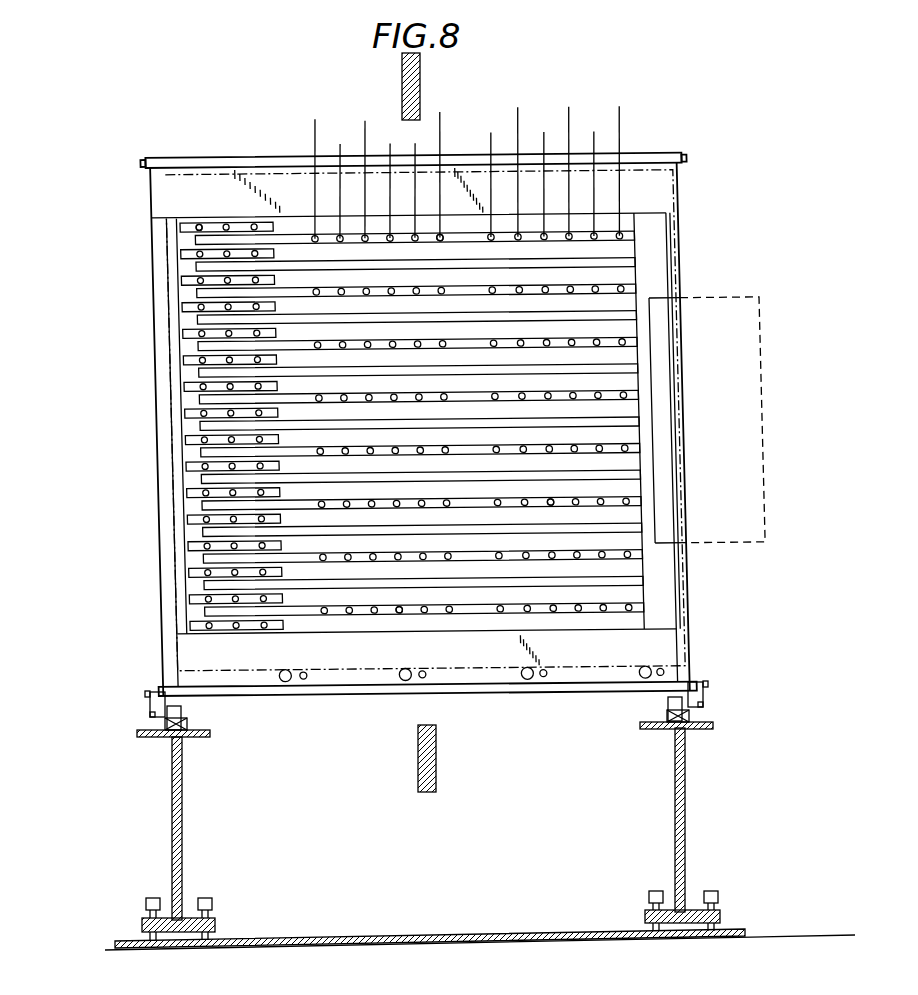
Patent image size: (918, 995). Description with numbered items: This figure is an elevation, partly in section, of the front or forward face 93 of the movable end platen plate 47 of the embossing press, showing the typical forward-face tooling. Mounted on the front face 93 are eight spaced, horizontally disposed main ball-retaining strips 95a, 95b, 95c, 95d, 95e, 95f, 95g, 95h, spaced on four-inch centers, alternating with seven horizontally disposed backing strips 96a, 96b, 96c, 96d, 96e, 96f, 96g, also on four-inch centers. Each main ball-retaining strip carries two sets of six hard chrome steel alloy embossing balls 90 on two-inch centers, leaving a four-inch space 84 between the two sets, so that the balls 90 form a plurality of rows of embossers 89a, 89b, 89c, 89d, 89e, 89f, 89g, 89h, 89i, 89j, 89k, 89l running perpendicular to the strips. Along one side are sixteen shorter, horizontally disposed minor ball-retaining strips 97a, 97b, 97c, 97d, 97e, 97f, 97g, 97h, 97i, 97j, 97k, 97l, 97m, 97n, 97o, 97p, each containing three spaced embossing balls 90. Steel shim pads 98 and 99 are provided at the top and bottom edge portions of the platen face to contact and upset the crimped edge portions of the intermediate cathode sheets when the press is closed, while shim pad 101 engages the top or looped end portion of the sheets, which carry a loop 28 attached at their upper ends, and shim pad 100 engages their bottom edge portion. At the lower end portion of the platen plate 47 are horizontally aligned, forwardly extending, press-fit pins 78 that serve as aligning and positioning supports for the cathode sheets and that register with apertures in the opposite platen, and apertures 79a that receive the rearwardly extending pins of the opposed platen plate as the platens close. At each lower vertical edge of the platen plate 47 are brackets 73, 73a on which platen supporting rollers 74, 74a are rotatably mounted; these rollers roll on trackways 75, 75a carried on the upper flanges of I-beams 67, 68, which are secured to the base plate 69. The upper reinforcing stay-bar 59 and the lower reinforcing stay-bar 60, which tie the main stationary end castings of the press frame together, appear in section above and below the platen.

The loop 28 is at (760, 372).
The movable end platen plate 47 is at (487, 698).
The upper reinforcing stay-bar 59 is at (400, 66).
The lower reinforcing stay-bar 60 is at (437, 772).
The I-beam 67 is at (676, 812).
The I-beam 68 is at (183, 836).
The base plate 69 is at (436, 938).
The bracket 73 is at (705, 698).
The bracket 73a is at (149, 704).
The platen supporting roller 74 is at (665, 732).
The platen supporting roller 74a is at (182, 714).
The trackway 75 is at (714, 723).
The trackway 75a is at (172, 738).
The forwardly extending pin 78 is at (303, 679).
The aperture 79a is at (282, 683).
The space 84 is at (485, 614).
The row of embossers 89a is at (624, 161).
The row of embossers 89b is at (599, 173).
The row of embossers 89c is at (570, 161).
The row of embossers 89d is at (544, 174).
The row of embossers 89e is at (520, 163).
The row of embossers 89f is at (491, 176).
The row of embossers 89g is at (450, 167).
The row of embossers 89h is at (417, 178).
The row of embossers 89i is at (386, 179).
The row of embossers 89j is at (363, 167).
The row of embossers 89k is at (344, 179).
The row of embossers 89l is at (322, 166).
The embossing ball 90 is at (249, 278).
The front face 93 is at (660, 194).
The main ball-retaining strip 95a is at (644, 607).
The main ball-retaining strip 95b is at (642, 554).
The main ball-retaining strip 95c is at (641, 501).
The main ball-retaining strip 95d is at (640, 448).
The main ball-retaining strip 95e is at (638, 395).
The main ball-retaining strip 95f is at (637, 342).
The main ball-retaining strip 95g is at (636, 289).
The main ball-retaining strip 95h is at (634, 236).
The backing strip 96a is at (643, 581).
The backing strip 96b is at (642, 528).
The backing strip 96c is at (640, 475).
The backing strip 96d is at (639, 421).
The backing strip 96e is at (638, 368).
The backing strip 96f is at (636, 315).
The backing strip 96g is at (635, 262).
The minor ball-retaining strip 97a is at (190, 626).
The minor ball-retaining strip 97b is at (189, 599).
The minor ball-retaining strip 97c is at (189, 573).
The minor ball-retaining strip 97d is at (188, 546).
The minor ball-retaining strip 97e is at (187, 520).
The minor ball-retaining strip 97f is at (187, 493).
The minor ball-retaining strip 97g is at (186, 467).
The minor ball-retaining strip 97h is at (186, 440).
The minor ball-retaining strip 97i is at (185, 414).
The minor ball-retaining strip 97j is at (184, 387).
The minor ball-retaining strip 97k is at (184, 360).
The minor ball-retaining strip 97l is at (183, 334).
The minor ball-retaining strip 97m is at (182, 307).
The minor ball-retaining strip 97n is at (182, 281).
The minor ball-retaining strip 97o is at (181, 254).
The minor ball-retaining strip 97p is at (180, 228).
The steel shim pad 98 is at (274, 182).
The steel shim pad 99 is at (592, 690).
The steel shim pad 100 is at (172, 632).
The steel shim pad 101 is at (665, 620).